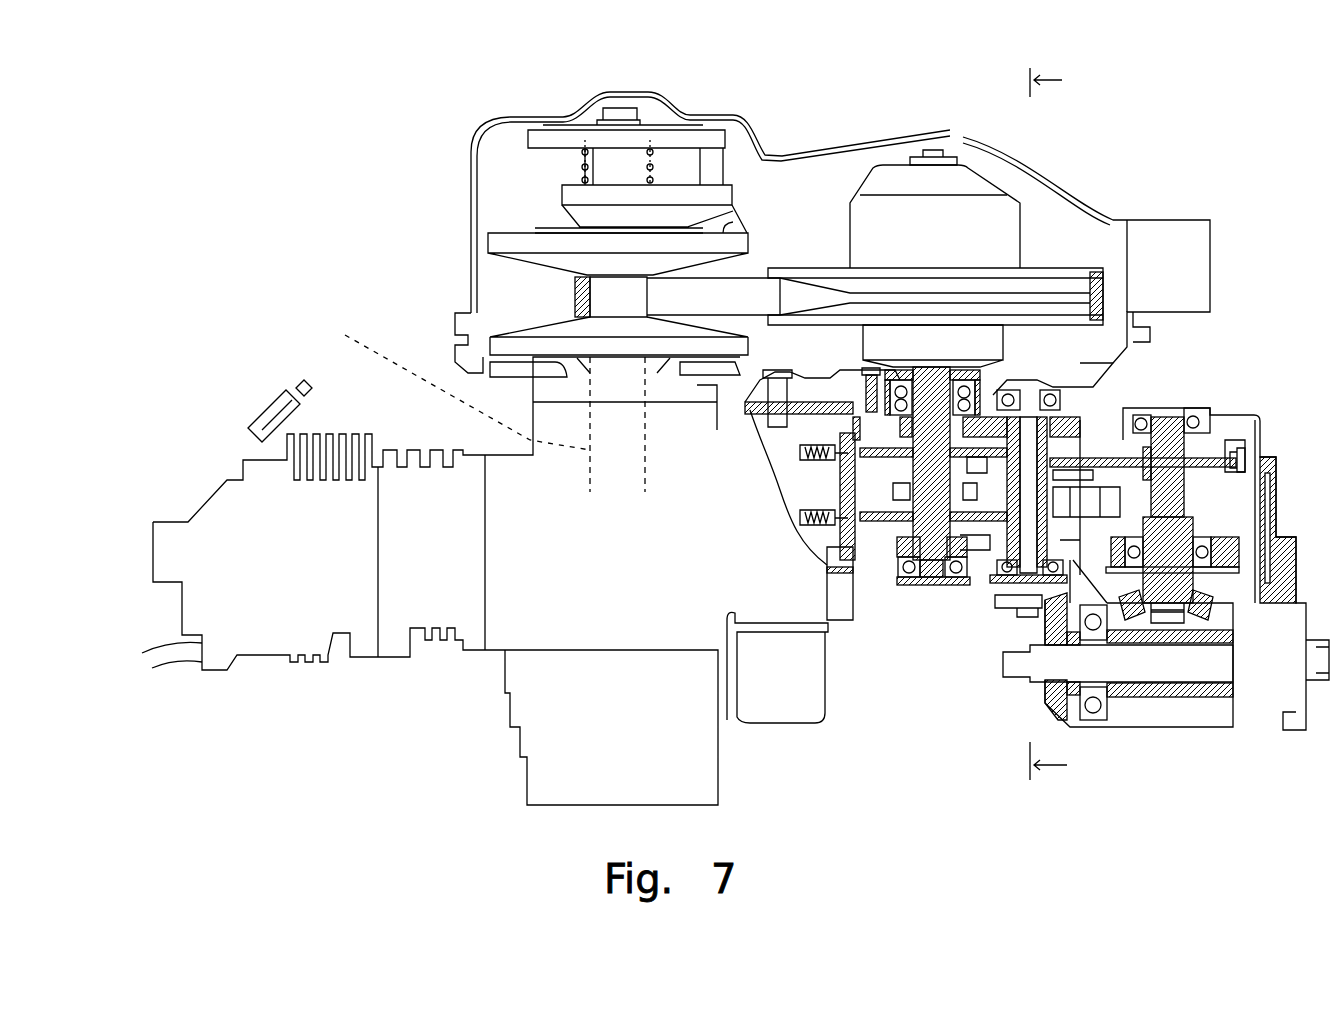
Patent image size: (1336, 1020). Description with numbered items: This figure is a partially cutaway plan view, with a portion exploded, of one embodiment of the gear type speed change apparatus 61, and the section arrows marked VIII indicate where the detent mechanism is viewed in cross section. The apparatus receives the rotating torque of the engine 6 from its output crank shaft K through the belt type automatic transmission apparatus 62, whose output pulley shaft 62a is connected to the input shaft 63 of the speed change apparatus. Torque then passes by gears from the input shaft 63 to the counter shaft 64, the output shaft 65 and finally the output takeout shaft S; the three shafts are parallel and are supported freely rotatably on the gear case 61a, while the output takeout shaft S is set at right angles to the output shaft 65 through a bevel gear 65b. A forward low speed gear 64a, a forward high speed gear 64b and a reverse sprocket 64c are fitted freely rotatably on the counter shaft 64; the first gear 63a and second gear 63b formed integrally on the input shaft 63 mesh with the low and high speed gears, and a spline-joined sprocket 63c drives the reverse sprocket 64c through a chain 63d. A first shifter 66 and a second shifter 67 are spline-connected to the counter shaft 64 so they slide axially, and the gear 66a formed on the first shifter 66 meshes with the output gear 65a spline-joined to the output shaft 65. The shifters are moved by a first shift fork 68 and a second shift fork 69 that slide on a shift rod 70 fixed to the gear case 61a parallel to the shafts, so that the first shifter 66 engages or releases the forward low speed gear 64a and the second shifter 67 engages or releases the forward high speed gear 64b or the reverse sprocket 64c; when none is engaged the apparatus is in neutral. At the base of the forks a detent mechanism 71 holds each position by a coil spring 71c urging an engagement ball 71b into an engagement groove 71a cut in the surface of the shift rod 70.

The engine 6 is at (391, 694).
The crank shaft K is at (456, 380).
The gear type speed change apparatus 61 is at (924, 722).
The gear case 61a is at (838, 557).
The belt type automatic transmission apparatus 62 is at (780, 237).
The shaft of output pulley 62a is at (925, 365).
The input shaft 63 is at (945, 365).
The first gear 63a is at (888, 372).
The second gear 63b is at (893, 560).
The sprocket 63c is at (940, 578).
The chain 63d is at (900, 560).
The counter shaft 64 is at (995, 578).
The forward low speed gear 64a is at (1130, 405).
The forward high speed gear 64b is at (1153, 490).
The reverse sprocket 64c is at (1156, 518).
The output shaft 65 is at (1233, 600).
The output gear 65a is at (1230, 413).
The bevel gear 65b is at (1097, 572).
The first shifter 66 is at (1035, 430).
The gear 66a is at (1135, 412).
The second shifter 67 is at (1085, 450).
The first shift fork 68 is at (855, 363).
The second shift fork 69 is at (870, 563).
The shift rod 70 is at (845, 495).
The detent mechanism 71 is at (596, 645).
The engagement groove 71a is at (850, 513).
The engagement ball 71b is at (837, 472).
The coil spring 71c is at (797, 455).
The output takeout shaft S is at (1127, 660).
The section line VIII is at (1048, 423).